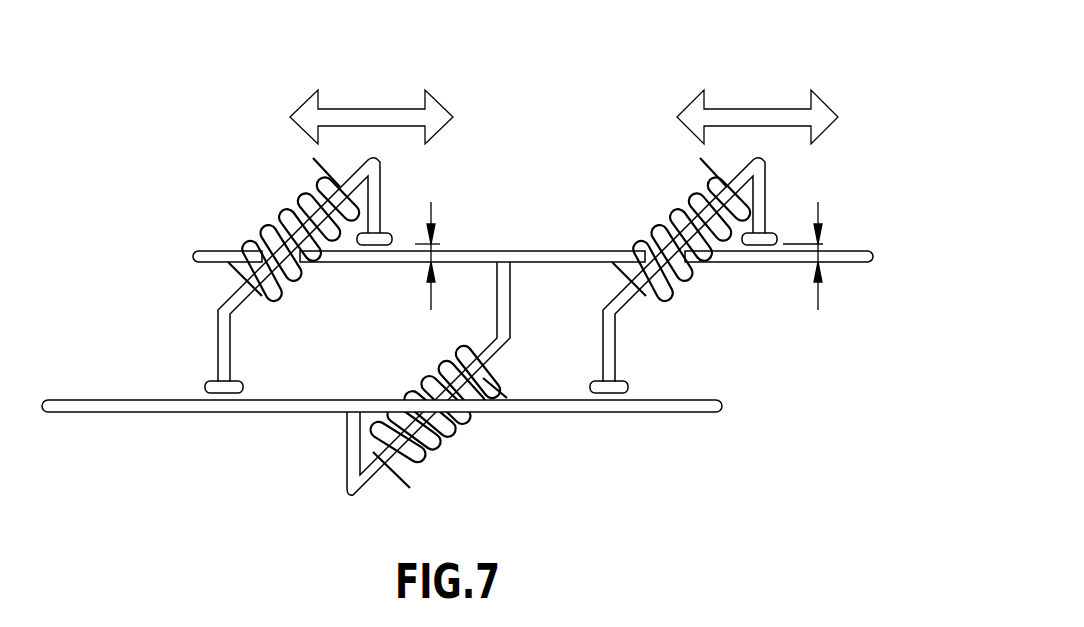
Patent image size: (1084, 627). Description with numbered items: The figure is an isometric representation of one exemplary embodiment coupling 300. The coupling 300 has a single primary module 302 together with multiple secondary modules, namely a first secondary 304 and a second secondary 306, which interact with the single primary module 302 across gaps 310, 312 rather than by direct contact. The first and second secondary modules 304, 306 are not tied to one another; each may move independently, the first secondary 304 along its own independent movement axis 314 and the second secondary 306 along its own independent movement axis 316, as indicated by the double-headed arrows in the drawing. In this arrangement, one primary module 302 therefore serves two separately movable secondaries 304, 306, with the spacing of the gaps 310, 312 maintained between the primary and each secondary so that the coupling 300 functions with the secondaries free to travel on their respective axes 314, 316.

The coupling 300 is at (875, 46).
The primary module 302 is at (520, 449).
The first secondary module 304 is at (787, 184).
The second secondary module 306 is at (401, 184).
The gap 310 is at (819, 290).
The gap 312 is at (431, 290).
The independent movement axis 314 is at (777, 108).
The independent movement axis 316 is at (390, 108).